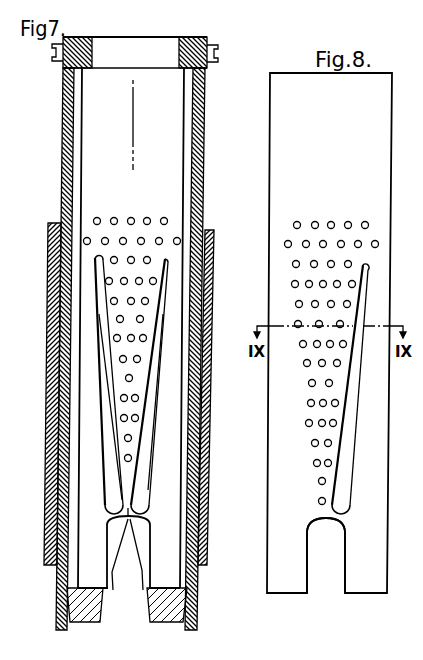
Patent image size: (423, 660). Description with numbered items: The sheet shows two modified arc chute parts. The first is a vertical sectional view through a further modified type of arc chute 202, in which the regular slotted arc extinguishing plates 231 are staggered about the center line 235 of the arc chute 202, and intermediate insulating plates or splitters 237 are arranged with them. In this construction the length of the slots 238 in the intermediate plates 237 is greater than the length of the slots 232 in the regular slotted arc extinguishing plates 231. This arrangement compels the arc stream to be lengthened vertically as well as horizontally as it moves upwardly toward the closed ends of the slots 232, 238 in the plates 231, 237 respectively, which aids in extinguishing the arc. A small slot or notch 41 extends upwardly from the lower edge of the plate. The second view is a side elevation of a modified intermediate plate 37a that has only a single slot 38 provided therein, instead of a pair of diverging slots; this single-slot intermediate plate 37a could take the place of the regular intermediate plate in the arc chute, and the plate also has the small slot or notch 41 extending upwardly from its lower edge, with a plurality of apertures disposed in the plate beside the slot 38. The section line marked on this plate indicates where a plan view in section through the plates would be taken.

In FIG. 7, the arc chute 202 is at (47, 136).
In FIG. 7, the center line 235 is at (134, 131).
In FIG. 7, the intermediate plate 237 is at (82, 170).
In FIG. 7, the slot 238 is at (96, 281).
In FIG. 7, the slot 232 is at (100, 332).
In FIG. 7, the slot or notch 41 is at (108, 570).
In FIG. 8, the slot or notch 41 is at (307, 588).
In FIG. 7, the slotted arc extinguishing plate 231 is at (138, 572).
In FIG. 8, the intermediate plate 37a is at (388, 186).
In FIG. 8, the slot 38 is at (351, 447).